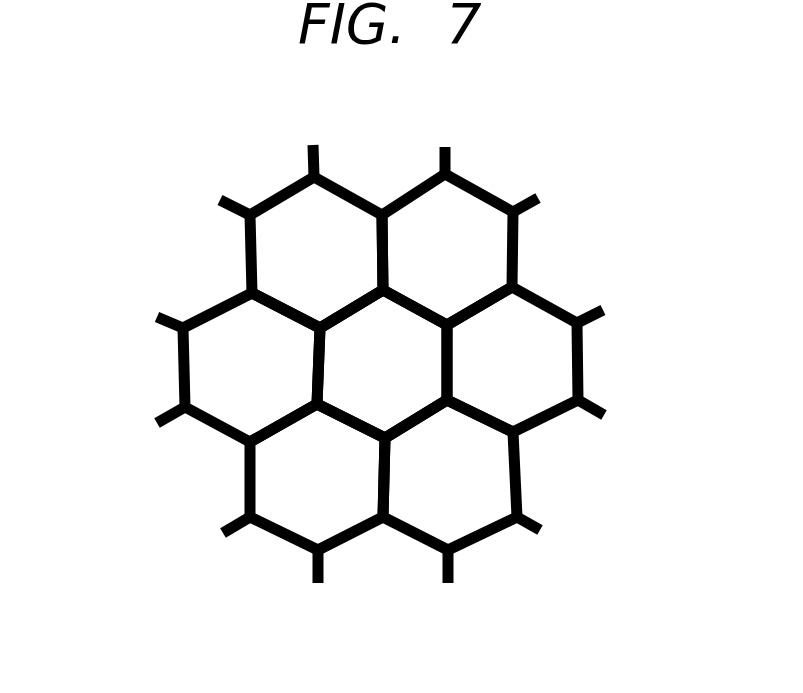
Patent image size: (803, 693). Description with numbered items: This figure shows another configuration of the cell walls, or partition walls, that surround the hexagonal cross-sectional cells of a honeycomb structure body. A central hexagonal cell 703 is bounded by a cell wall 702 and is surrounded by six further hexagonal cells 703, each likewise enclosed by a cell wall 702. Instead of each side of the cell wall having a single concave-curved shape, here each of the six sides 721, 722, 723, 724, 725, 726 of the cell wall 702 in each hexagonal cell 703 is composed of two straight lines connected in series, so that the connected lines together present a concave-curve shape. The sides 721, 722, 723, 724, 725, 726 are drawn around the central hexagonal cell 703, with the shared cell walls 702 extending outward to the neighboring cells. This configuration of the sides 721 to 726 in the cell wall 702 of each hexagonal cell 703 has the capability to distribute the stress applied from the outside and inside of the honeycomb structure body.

The cell wall 702 is at (300, 181).
The hexagonal cell 703 is at (367, 379).
The side 721 is at (450, 360).
The side 722 is at (418, 300).
The side 723 is at (343, 311).
The side 724 is at (312, 357).
The side 725 is at (347, 425).
The side 726 is at (410, 433).